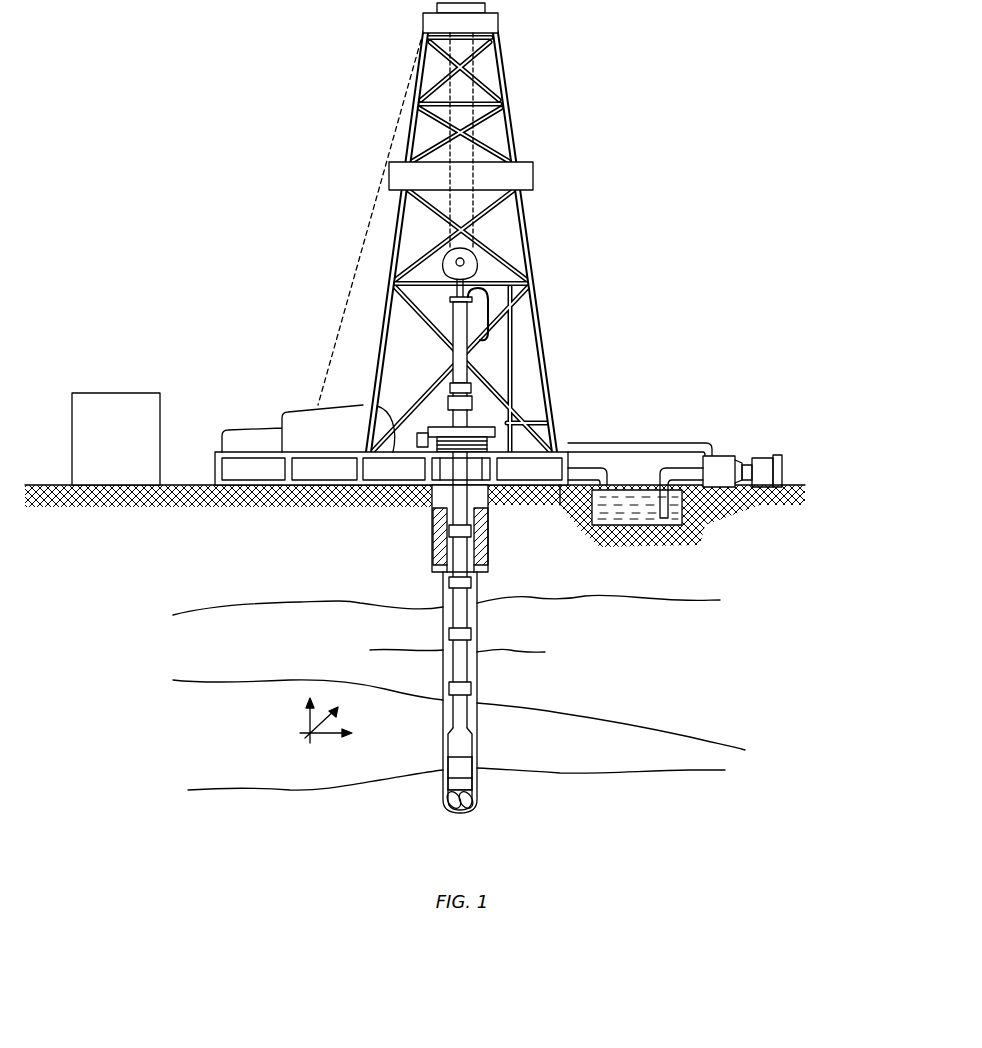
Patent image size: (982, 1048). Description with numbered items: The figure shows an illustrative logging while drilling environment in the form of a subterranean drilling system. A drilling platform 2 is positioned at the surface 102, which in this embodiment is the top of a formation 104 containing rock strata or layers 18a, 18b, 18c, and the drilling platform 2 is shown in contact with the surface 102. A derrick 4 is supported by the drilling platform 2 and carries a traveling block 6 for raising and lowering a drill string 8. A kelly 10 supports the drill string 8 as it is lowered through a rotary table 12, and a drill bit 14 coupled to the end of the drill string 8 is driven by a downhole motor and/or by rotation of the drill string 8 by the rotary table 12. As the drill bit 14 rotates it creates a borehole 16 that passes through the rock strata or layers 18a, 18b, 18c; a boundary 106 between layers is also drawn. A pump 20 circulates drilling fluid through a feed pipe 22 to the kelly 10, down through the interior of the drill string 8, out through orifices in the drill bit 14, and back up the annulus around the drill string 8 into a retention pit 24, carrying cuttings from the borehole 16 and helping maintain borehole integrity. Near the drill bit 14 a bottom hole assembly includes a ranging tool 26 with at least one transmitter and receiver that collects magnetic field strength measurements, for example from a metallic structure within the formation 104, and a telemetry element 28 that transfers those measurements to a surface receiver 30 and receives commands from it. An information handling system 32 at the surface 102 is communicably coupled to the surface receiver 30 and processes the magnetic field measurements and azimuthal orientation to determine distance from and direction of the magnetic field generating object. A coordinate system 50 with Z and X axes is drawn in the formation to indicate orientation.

The drilling platform 2 is at (213, 462).
The derrick 4 is at (502, 75).
The traveling block 6 is at (478, 258).
The drill string 8 is at (455, 598).
The kelly 10 is at (463, 315).
The rotary table 12 is at (488, 425).
The drill bit 14 is at (472, 797).
The borehole 16 is at (478, 612).
The rock strata or layer 18a is at (190, 751).
The rock strata or layer 18b is at (242, 653).
The rock strata or layer 18c is at (610, 583).
The pump 20 is at (732, 456).
The feed pipe 22 is at (657, 443).
The retention pit 24 is at (657, 528).
The ranging tool 26 is at (452, 764).
The telemetry element 28 is at (465, 748).
The surface receiver 30 is at (458, 385).
The information handling system 32 is at (102, 449).
The coordinate system 50 is at (305, 720).
The surface 102 is at (60, 485).
The formation 104 is at (166, 561).
The formation boundary 106 is at (505, 650).